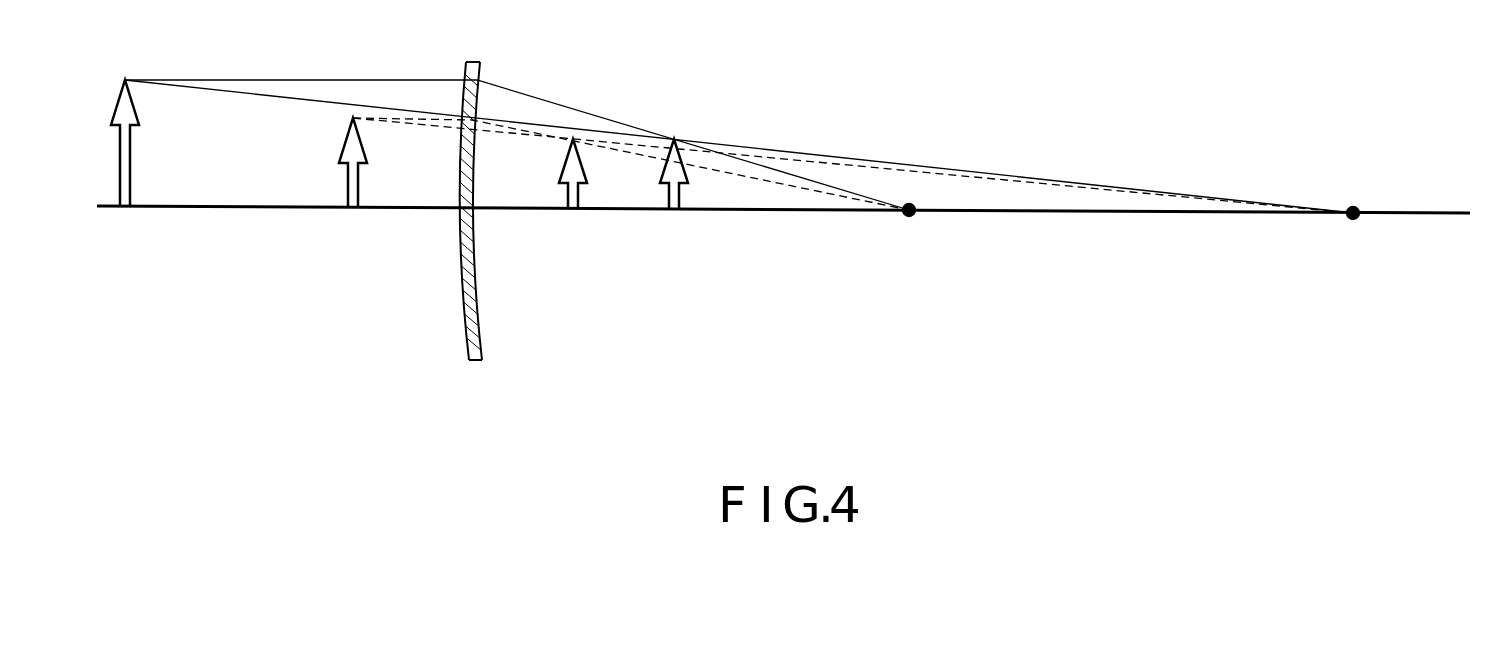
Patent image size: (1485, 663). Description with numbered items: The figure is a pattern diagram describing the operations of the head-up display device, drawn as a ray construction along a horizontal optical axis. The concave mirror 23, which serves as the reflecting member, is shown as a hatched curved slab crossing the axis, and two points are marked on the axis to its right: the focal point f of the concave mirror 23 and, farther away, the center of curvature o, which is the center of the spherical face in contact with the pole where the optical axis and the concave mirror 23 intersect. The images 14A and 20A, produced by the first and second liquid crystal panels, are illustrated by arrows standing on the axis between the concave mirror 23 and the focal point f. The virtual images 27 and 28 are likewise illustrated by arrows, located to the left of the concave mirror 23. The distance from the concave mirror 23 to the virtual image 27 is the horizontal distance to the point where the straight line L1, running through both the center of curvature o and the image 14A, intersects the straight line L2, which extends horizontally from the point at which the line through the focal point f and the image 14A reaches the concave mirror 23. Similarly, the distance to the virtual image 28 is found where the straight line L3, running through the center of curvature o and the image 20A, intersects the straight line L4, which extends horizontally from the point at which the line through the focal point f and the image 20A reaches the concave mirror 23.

The virtual image 28 is at (131, 180).
The virtual image 27 is at (360, 181).
The image 14A is at (580, 193).
The image 20A is at (680, 193).
The concave mirror 23 is at (462, 316).
The straight line L1 is at (926, 172).
The straight line L2 is at (390, 119).
The straight line L3 is at (768, 148).
The straight line L4 is at (297, 80).
The focal point f is at (909, 227).
The center of curvature o is at (1353, 232).